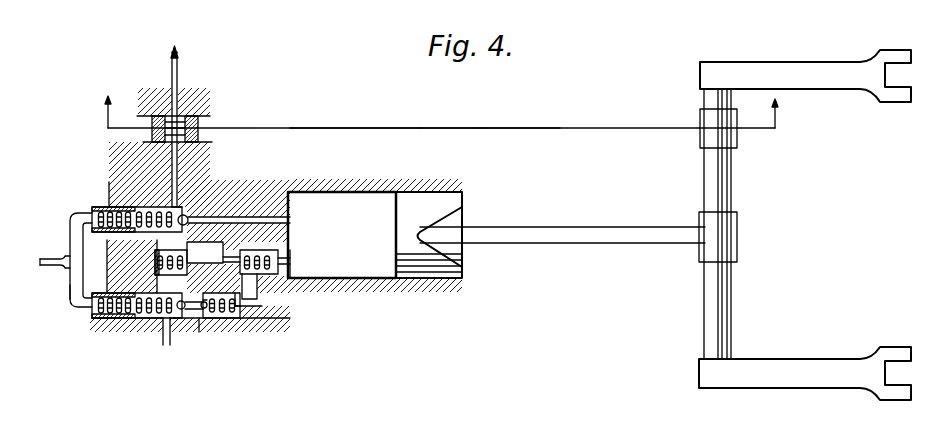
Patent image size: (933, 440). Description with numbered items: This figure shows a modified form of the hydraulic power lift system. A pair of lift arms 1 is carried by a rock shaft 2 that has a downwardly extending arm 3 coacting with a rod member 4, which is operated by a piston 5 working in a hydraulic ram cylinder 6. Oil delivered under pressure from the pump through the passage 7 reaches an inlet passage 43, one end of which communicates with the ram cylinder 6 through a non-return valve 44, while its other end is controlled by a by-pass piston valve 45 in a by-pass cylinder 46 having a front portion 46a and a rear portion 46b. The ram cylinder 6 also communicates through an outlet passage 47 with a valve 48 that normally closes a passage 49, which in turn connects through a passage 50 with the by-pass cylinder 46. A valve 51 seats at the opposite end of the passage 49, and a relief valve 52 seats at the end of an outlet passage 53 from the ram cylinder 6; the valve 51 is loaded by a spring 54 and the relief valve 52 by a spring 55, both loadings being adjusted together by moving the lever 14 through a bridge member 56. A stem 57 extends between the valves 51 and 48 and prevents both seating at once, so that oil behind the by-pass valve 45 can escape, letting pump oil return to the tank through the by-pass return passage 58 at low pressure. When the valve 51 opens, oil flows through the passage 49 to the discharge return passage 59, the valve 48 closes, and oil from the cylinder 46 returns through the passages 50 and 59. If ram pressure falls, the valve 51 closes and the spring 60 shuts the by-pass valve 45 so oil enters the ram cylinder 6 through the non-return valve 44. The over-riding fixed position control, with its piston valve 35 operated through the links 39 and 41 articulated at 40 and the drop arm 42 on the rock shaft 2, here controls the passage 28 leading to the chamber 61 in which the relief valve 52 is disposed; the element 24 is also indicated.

The lift arms 1 is at (766, 68).
The rock shaft 2 is at (710, 95).
The downwardly extending arm 3 is at (724, 233).
The rod member 4 is at (636, 227).
The piston 5 is at (420, 202).
The ram cylinder 6 is at (342, 235).
The passage 7 is at (132, 266).
The lever 14 is at (50, 258).
The control member 24 is at (148, 115).
The passage 28 is at (178, 98).
The piston valve 35 is at (193, 122).
The link 39 is at (363, 128).
The articulation point 40 is at (437, 128).
The link 41 is at (505, 128).
The drop arm 42 is at (706, 136).
The inlet passage 43 is at (276, 282).
The non-return valve 44 is at (272, 250).
The by-pass piston valve 45 is at (258, 285).
The by-pass cylinder 46 is at (108, 268).
The front portion 46a is at (189, 217).
The rear portion 46b is at (90, 302).
The outlet passage 47 is at (256, 303).
The valve 48 is at (208, 316).
The passage 49 is at (192, 310).
The passage 50 is at (237, 318).
The valve 51 is at (162, 322).
The relief valve 52 is at (190, 216).
The outlet passage 53 is at (253, 217).
The spring 54 is at (135, 320).
The spring 55 is at (132, 197).
The bridge member 56 is at (72, 223).
The stem 57 is at (206, 320).
The by-pass return passage 58 is at (172, 250).
The discharge return passage 59 is at (177, 318).
The spring 60 is at (83, 296).
The chamber 61 is at (152, 200).